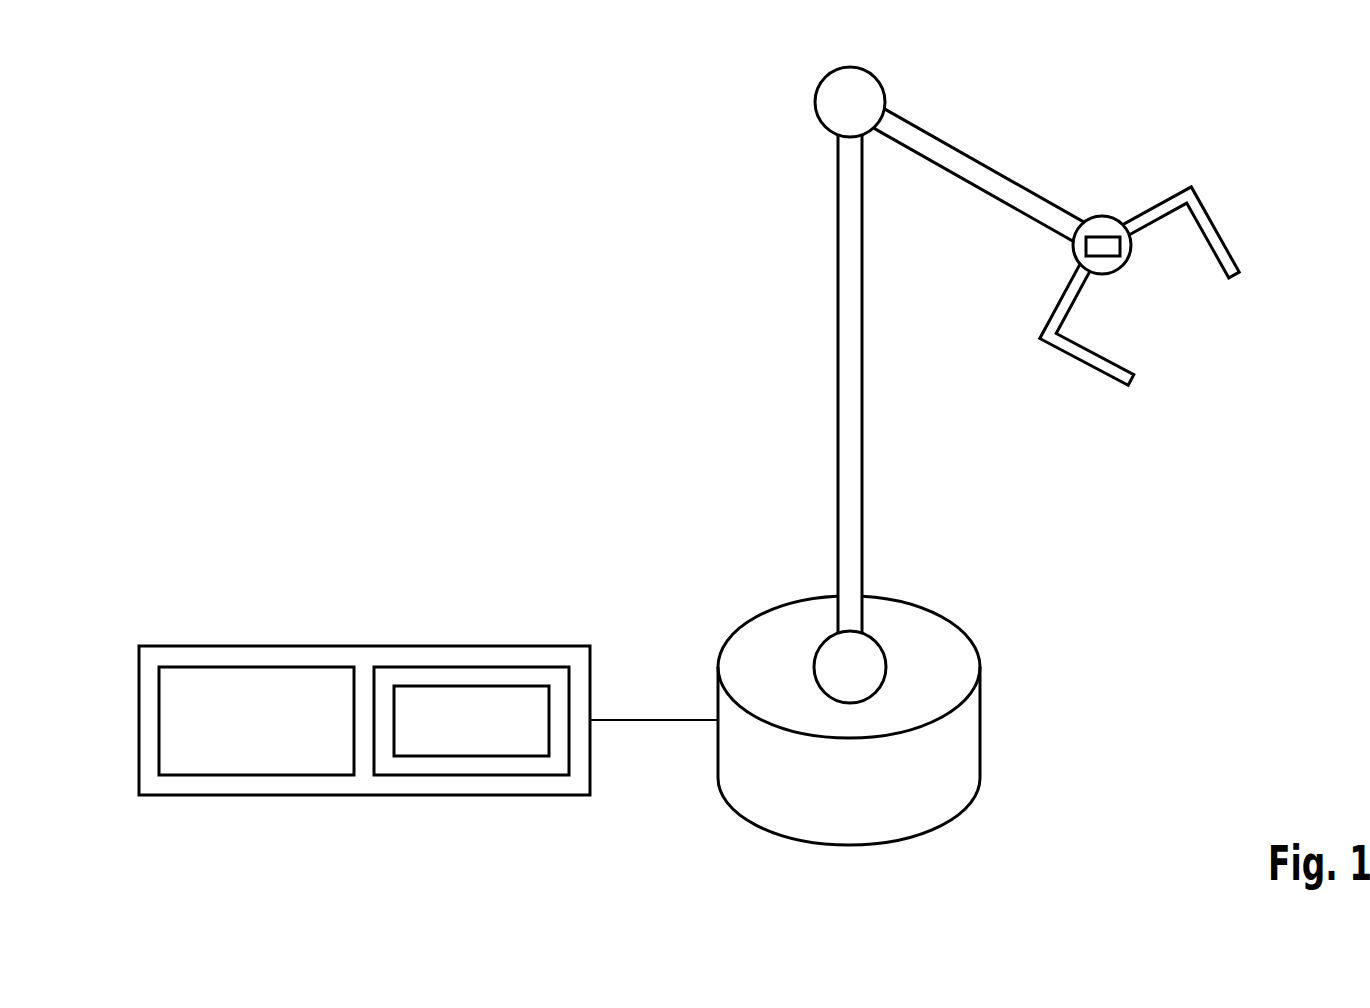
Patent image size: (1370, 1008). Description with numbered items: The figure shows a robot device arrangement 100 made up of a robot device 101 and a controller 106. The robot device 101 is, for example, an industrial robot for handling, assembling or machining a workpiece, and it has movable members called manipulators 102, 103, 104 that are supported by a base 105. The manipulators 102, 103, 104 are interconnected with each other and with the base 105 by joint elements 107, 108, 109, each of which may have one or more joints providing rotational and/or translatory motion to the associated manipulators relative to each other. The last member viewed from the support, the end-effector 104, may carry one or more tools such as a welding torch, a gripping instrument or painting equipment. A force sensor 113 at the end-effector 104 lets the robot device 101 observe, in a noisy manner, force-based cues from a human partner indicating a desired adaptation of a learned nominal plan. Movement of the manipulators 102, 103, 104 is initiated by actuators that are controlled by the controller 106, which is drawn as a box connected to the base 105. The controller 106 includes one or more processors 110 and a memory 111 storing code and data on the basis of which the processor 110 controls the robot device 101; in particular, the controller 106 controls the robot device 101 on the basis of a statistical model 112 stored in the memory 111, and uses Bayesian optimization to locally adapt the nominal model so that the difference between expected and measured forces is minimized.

The robot device arrangement 100 is at (723, 437).
The robot device 101 is at (1004, 456).
The manipulator 102 is at (845, 429).
The manipulator 103 is at (989, 175).
The end-effector 104 is at (1215, 237).
The base 105 is at (965, 739).
The controller 106 is at (428, 686).
The joint element 107 is at (832, 653).
The joint element 108 is at (824, 104).
The joint element 109 is at (1093, 229).
The processor 110 is at (282, 667).
The memory 111 is at (471, 676).
The statistical model 112 is at (507, 686).
The force sensor 113 is at (1108, 234).